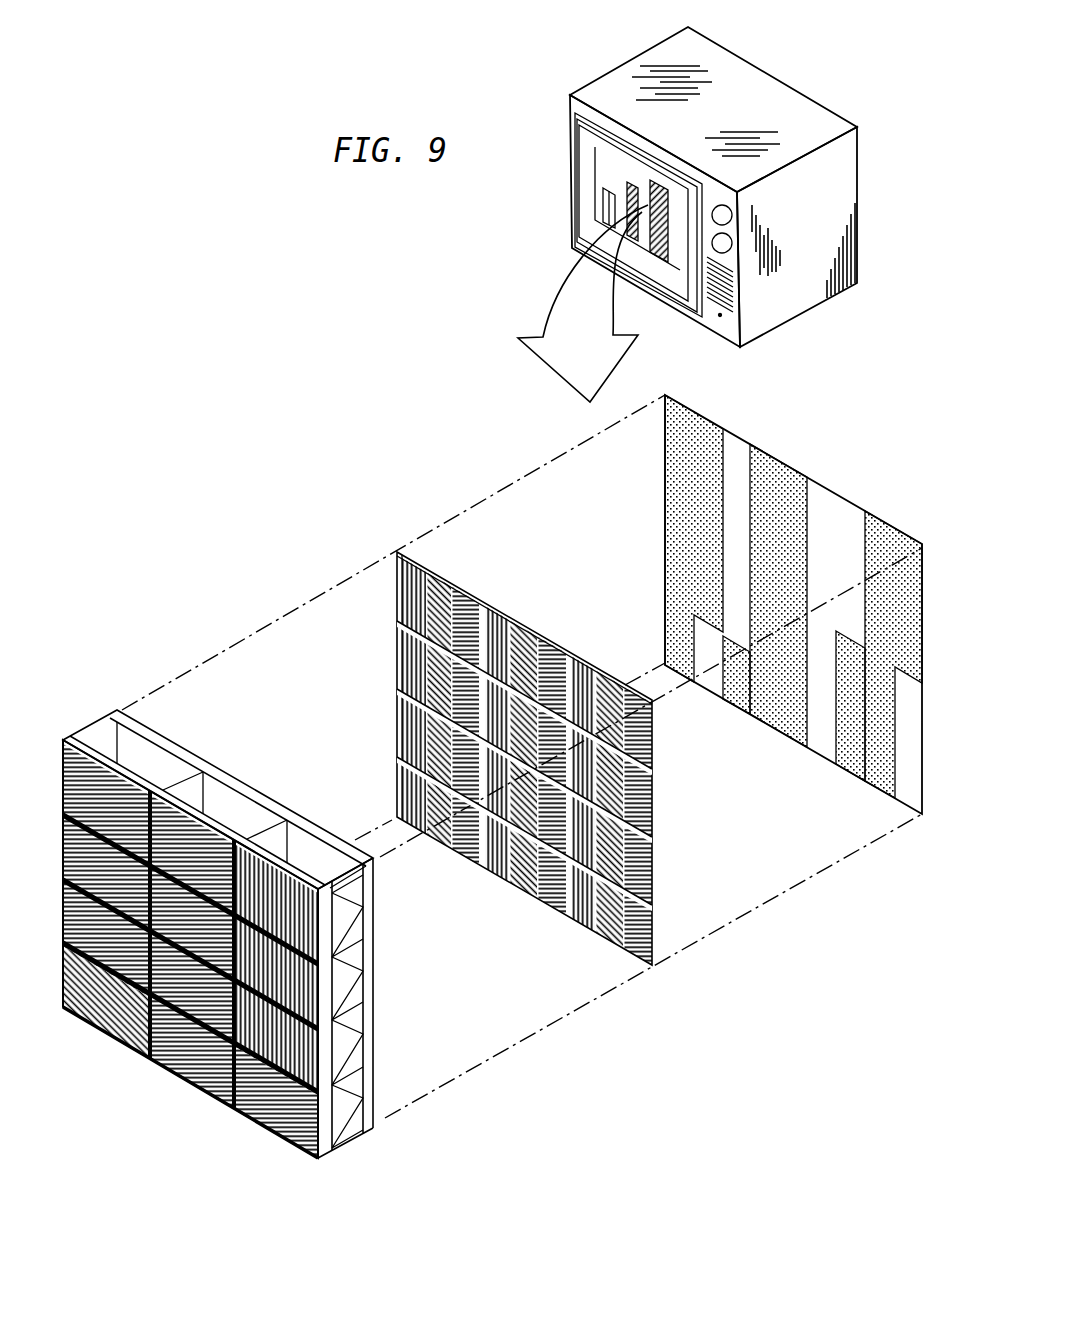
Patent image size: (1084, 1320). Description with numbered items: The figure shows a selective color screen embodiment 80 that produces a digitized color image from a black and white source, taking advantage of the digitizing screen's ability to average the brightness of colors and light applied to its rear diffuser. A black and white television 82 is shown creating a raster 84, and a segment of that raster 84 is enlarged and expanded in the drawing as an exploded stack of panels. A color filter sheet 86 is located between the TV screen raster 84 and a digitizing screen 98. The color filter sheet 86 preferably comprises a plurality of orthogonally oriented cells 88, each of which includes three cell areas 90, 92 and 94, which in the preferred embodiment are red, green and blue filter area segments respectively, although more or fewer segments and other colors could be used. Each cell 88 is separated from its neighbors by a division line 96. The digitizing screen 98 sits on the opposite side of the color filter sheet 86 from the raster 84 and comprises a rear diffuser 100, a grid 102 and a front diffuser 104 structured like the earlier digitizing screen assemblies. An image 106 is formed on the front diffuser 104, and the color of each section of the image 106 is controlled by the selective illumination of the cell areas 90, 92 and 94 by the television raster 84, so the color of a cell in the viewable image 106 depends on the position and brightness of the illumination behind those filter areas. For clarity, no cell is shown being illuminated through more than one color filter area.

The selective color screen embodiment 80 is at (375, 546).
The black and white television 82 is at (633, 58).
The raster 84 is at (683, 389).
The color filter sheet 86 is at (706, 777).
The cell 88 is at (488, 748).
The cell area 90 is at (404, 553).
The cell area 92 is at (433, 579).
The cell area 94 is at (458, 591).
The division line 96 is at (398, 622).
The digitizing screen 98 is at (266, 962).
The rear diffuser 100 is at (368, 1130).
The grid 102 is at (350, 1147).
The front diffuser 104 is at (325, 1159).
The image 106 is at (178, 930).